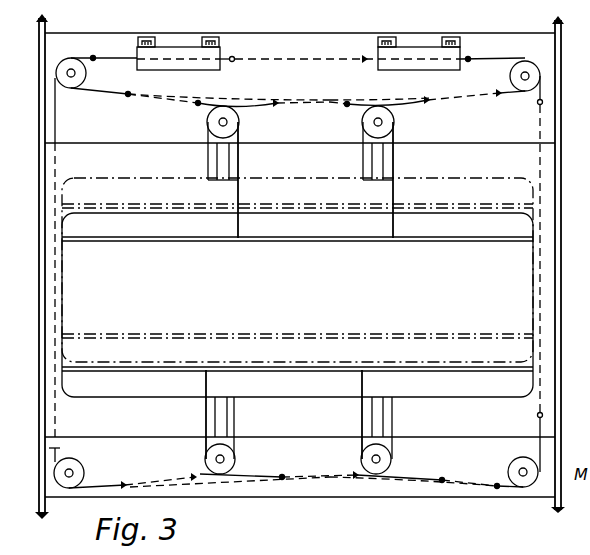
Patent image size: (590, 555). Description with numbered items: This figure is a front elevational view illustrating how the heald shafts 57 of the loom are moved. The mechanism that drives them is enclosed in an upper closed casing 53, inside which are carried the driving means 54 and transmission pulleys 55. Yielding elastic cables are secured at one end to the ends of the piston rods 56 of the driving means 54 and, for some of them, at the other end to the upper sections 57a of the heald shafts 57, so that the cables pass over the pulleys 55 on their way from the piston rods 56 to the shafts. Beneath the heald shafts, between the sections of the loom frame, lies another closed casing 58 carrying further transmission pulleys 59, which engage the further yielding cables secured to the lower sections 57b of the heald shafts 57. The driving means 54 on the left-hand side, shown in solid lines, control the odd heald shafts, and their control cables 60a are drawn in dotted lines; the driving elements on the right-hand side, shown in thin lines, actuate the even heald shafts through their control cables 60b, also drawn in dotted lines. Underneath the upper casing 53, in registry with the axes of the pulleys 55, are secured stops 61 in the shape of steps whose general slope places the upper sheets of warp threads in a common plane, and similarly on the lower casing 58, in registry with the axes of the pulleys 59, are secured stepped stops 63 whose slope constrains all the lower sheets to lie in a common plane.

The upper closed casing 53 is at (234, 47).
The driving means 54 is at (177, 56).
The transmission pulleys 55 is at (58, 75).
The piston rods 56 is at (119, 62).
The heald shafts 57 is at (325, 294).
The upper sections of the heald shafts 57a is at (330, 234).
The lower sections of the heald shafts 57b is at (333, 390).
The lower closed casing 58 is at (443, 438).
The transmission pulleys 59 is at (81, 467).
The control cables 60a is at (218, 104).
The control cables 60b is at (463, 97).
The stops 61 is at (218, 160).
The stops 63 is at (228, 416).